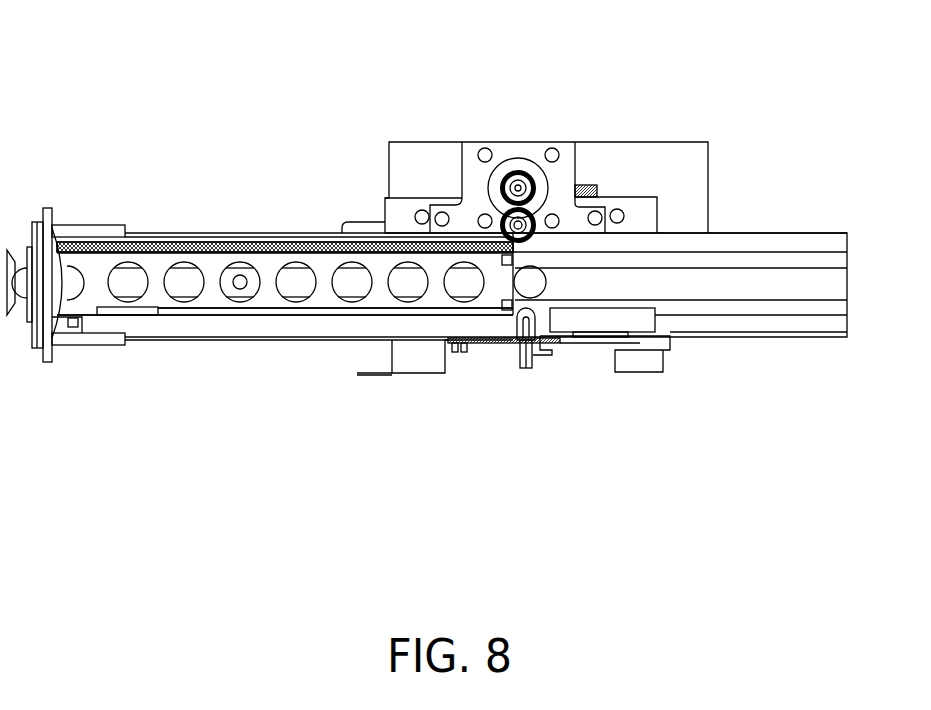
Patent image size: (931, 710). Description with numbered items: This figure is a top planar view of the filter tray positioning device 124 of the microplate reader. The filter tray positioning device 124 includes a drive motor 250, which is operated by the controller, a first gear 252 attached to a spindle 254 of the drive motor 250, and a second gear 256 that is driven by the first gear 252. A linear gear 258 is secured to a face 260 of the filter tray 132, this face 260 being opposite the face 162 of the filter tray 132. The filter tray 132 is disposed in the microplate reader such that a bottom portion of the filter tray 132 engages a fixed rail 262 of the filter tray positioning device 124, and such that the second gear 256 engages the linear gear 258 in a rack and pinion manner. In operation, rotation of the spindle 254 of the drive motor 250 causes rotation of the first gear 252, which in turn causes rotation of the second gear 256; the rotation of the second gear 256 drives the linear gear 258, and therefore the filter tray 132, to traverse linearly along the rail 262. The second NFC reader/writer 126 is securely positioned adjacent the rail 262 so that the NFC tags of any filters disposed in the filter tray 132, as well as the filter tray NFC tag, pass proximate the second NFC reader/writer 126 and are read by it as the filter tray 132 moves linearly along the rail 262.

The filter tray positioning device 124 is at (444, 108).
The second NFC reader/writer 126 is at (582, 343).
The filter tray 132 is at (208, 297).
The face of the filter tray 162 is at (303, 312).
The drive motor 250 is at (510, 170).
The first gear 252 is at (524, 185).
The spindle 254 is at (517, 183).
The second gear 256 is at (524, 227).
The linear gear 258 is at (463, 245).
The face of the filter tray 260 is at (317, 245).
The fixed rail 262 is at (798, 258).